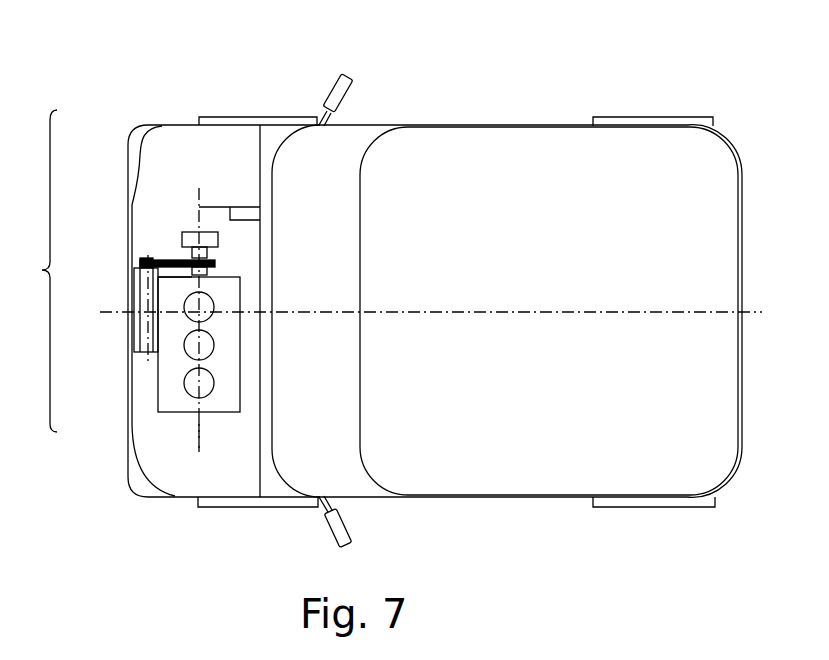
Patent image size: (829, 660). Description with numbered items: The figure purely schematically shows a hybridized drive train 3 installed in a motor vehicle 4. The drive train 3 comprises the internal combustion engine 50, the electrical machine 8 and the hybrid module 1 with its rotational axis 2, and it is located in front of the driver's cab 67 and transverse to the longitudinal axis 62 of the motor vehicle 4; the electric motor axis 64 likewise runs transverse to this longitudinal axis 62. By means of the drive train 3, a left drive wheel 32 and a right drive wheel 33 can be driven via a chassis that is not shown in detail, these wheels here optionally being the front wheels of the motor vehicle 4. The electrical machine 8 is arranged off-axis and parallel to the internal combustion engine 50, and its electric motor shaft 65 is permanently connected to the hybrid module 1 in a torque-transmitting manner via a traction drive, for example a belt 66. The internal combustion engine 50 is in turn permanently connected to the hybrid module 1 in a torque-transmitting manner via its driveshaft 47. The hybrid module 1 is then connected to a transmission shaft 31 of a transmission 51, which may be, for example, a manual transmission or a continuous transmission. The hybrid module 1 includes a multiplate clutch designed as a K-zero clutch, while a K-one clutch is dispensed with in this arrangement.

The hybrid module 1 is at (176, 258).
The rotational axis 2 is at (200, 432).
The drive train 3 is at (32, 271).
The motor vehicle 4 is at (552, 101).
The electrical machine 8 is at (140, 286).
The transmission shaft 31 is at (192, 250).
The left drive wheel 32 is at (207, 507).
The right drive wheel 33 is at (205, 117).
The driveshaft 47 is at (140, 323).
The internal combustion engine 50 is at (170, 402).
The transmission 51 is at (191, 232).
The longitudinal axis 62 is at (520, 315).
The electric motor axis 64 is at (188, 276).
The electric motor shaft 65 is at (140, 264).
The belt 66 is at (181, 254).
The driver's cab 67 is at (458, 158).